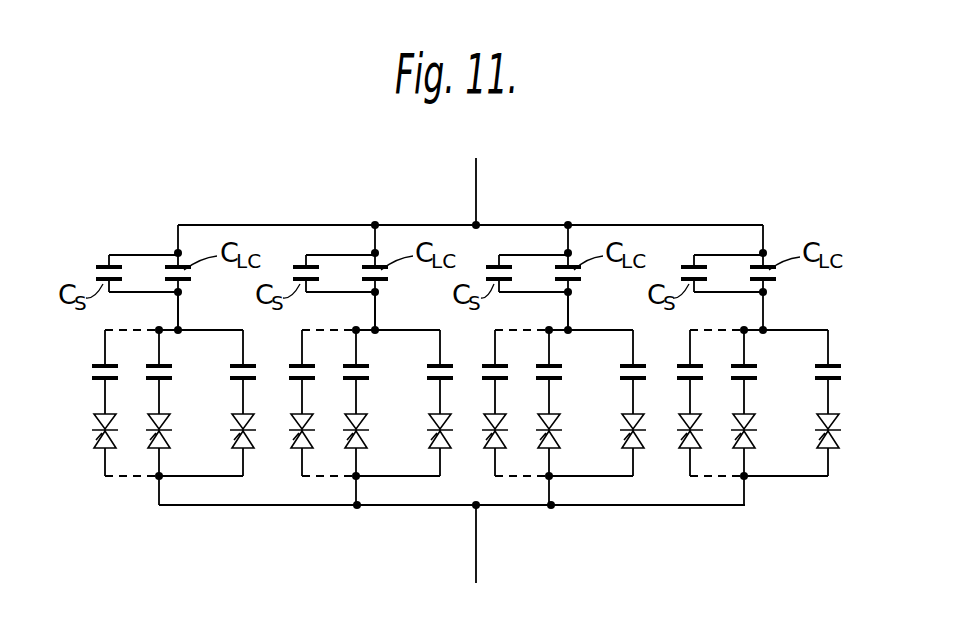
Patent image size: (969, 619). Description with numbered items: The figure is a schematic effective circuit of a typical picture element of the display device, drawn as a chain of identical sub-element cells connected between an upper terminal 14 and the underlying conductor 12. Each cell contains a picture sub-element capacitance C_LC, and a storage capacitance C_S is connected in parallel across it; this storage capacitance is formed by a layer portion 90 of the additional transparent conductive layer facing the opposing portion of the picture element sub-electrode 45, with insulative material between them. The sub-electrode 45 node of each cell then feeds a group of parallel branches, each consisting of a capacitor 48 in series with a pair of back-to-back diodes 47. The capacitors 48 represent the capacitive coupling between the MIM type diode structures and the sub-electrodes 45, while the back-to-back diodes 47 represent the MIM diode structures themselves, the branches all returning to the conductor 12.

The row conductor terminal 14 is at (478, 181).
The conductor 12 is at (478, 563).
The layer portion 90 is at (388, 234).
The picture element sub-electrode 45 is at (403, 311).
The capacitor 48 is at (470, 368).
The back-to-back diodes 47 is at (471, 457).